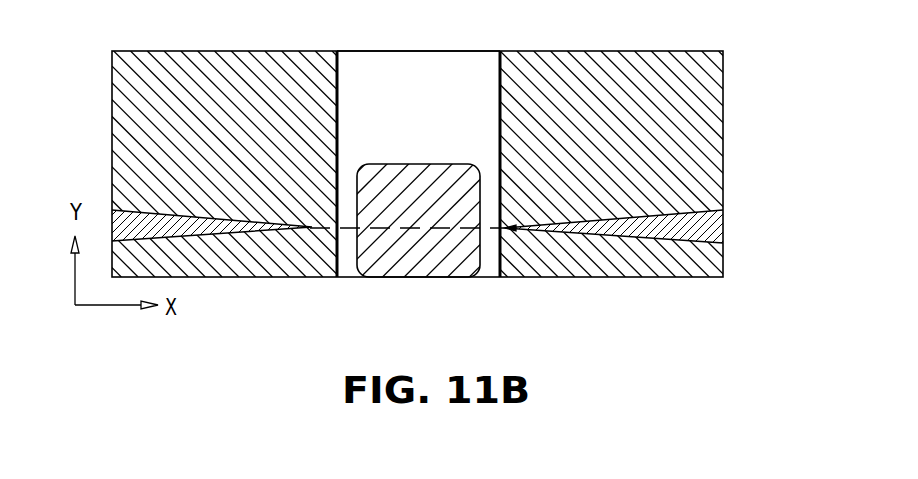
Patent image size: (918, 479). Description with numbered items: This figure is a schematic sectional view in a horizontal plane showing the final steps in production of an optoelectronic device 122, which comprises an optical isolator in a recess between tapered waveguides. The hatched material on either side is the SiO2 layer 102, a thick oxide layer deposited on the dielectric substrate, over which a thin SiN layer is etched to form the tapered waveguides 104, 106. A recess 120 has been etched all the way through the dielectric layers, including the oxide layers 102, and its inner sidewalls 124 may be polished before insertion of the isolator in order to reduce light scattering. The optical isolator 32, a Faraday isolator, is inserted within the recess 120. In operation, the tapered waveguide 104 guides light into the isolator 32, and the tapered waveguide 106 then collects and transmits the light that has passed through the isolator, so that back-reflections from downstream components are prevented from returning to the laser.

The optoelectronic device 122 is at (763, 67).
The SiO2 layer 102 is at (705, 143).
The recess 120 is at (395, 105).
The inner sidewalls 124 is at (500, 70).
The optical isolator 32 is at (403, 263).
The tapered waveguide 104 is at (223, 232).
The tapered waveguide 106 is at (668, 228).